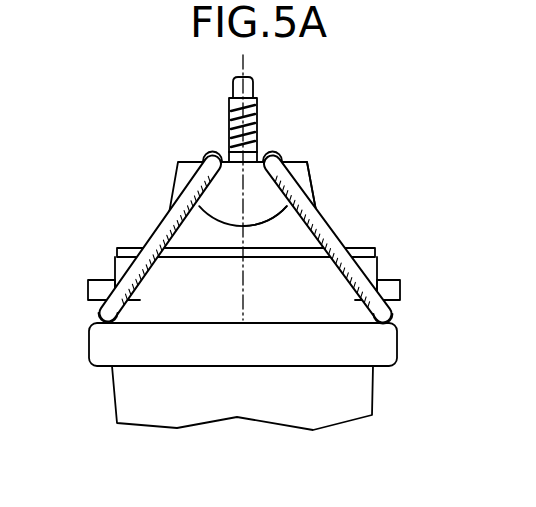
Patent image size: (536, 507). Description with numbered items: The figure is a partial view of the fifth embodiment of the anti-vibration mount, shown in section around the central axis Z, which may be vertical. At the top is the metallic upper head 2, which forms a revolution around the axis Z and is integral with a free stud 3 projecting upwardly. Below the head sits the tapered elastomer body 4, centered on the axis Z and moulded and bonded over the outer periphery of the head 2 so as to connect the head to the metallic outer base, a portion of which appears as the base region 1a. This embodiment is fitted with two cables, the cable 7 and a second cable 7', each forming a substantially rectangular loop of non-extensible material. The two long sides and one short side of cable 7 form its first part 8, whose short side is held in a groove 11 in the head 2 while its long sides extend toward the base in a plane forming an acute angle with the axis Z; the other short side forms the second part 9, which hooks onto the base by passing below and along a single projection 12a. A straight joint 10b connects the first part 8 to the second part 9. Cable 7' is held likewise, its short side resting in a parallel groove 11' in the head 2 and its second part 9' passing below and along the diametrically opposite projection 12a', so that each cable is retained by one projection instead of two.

The axis Z is at (243, 58).
The upper head 2 is at (265, 180).
The free stud 3 is at (252, 110).
The elastomer body 4 is at (293, 237).
The cable 7 is at (152, 238).
The second cable 7' is at (348, 239).
The first part 8 is at (185, 215).
The second part 9 is at (77, 306).
The second part 9' is at (414, 306).
The straight part 10b is at (100, 317).
The groove 11 is at (193, 129).
The groove 11' is at (308, 133).
The shoulder block 1a is at (123, 262).
The projection 12a is at (71, 271).
The projection 12a' is at (412, 264).